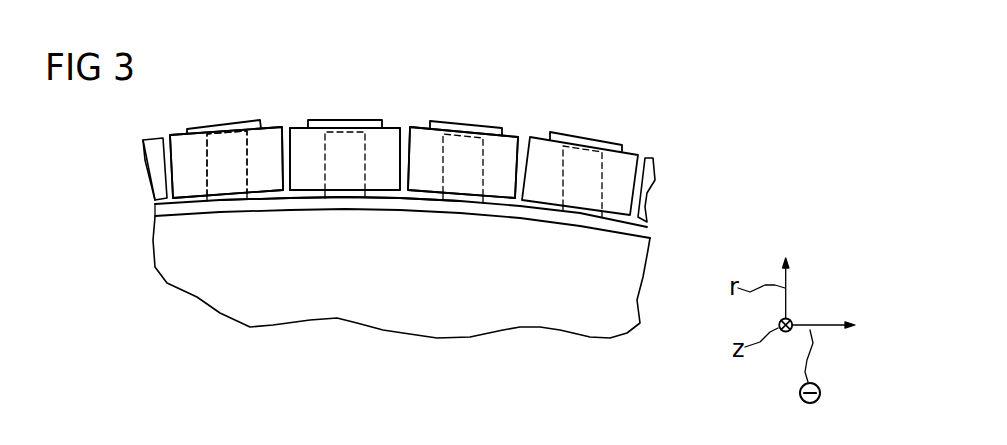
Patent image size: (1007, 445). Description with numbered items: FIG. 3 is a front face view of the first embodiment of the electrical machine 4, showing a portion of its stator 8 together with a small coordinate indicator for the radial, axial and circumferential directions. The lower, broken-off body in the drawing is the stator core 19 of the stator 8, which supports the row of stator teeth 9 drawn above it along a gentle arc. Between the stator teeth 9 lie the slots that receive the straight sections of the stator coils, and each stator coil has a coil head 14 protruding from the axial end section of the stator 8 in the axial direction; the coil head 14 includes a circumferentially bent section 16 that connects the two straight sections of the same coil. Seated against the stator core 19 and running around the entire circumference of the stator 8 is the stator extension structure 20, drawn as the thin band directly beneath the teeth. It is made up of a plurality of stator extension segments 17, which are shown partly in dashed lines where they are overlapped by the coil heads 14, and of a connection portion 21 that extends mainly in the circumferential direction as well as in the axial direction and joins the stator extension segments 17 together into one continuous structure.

The electrical machine 4 is at (538, 100).
The stator 8 is at (463, 162).
The stator teeth 9 is at (203, 128).
The coil head 14 is at (268, 130).
The circumferentially bent section 16 is at (227, 163).
The stator extension segments 17 is at (230, 182).
The stator core 19 is at (520, 313).
The stator extension structure 20 is at (405, 204).
The connection portion 21 is at (387, 205).